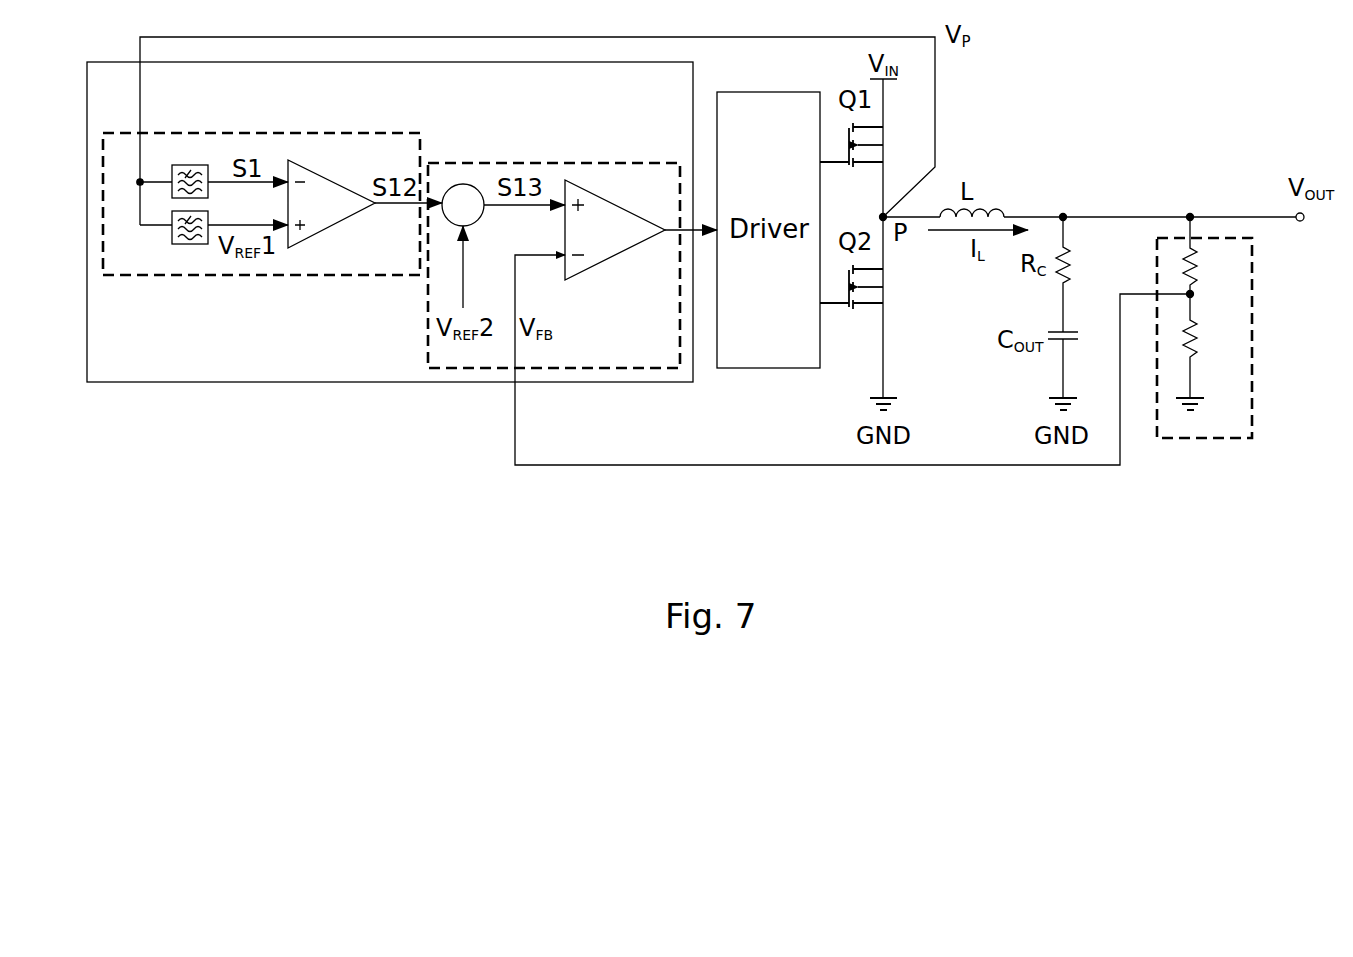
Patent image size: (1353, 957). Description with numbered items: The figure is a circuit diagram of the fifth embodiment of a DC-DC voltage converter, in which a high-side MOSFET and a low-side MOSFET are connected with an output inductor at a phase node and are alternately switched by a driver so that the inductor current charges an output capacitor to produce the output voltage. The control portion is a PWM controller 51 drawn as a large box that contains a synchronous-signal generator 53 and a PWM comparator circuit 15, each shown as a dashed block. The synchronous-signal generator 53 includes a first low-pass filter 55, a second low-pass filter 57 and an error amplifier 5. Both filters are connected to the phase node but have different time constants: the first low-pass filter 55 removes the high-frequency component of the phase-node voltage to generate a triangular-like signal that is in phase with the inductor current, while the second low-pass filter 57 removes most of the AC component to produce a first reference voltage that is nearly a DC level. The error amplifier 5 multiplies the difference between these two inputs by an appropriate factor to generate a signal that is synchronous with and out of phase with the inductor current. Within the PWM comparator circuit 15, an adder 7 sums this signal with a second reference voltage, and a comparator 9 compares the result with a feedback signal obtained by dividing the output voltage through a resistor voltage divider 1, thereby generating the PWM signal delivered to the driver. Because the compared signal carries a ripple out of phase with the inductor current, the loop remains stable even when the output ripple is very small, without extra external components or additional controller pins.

The resistor voltage divider 1 is at (1252, 330).
The error amplifier 5 is at (348, 222).
The adder 7 is at (463, 184).
The comparator 9 is at (628, 248).
The PWM comparator circuit 15 is at (553, 163).
The PWM controller 51 is at (428, 382).
The synchronous-signal generator 53 is at (265, 275).
The first low-pass filter 55 is at (190, 165).
The second low-pass filter 57 is at (192, 244).